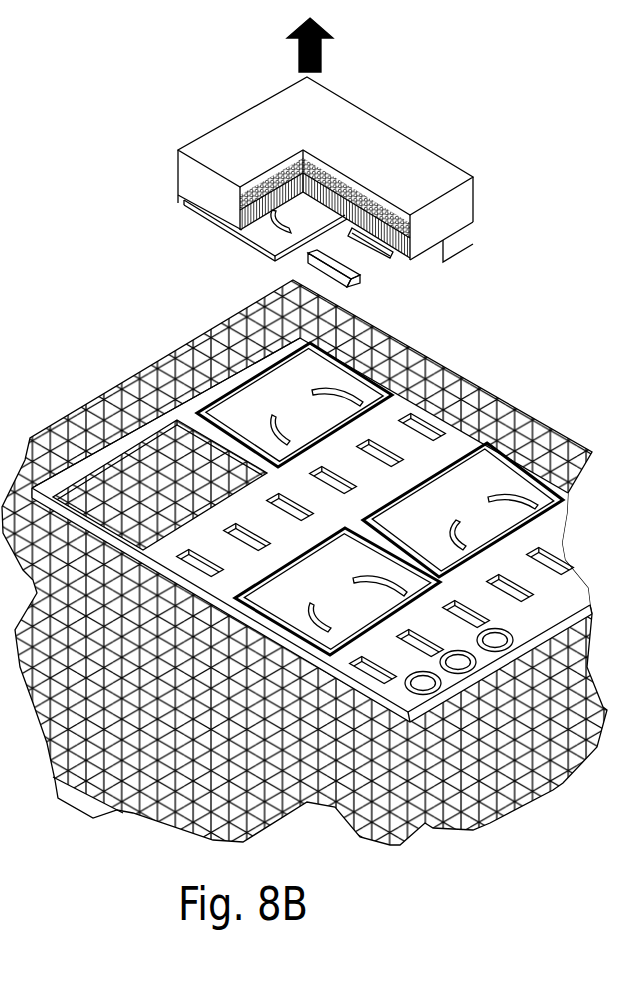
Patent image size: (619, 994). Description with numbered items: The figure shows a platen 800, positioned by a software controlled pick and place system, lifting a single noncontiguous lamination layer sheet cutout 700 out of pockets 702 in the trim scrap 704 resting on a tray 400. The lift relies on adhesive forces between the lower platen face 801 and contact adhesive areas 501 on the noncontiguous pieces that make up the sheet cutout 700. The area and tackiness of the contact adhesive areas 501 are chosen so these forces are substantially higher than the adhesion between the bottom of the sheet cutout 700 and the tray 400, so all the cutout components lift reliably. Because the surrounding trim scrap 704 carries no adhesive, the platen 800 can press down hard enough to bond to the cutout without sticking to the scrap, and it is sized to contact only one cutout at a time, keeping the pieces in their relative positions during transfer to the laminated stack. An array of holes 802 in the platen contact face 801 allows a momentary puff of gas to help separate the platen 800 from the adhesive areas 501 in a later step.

The tray 400 is at (485, 388).
The contact adhesive areas 501 is at (312, 255).
The single noncontiguous lamination layer sheet cutout 700 is at (402, 355).
The pockets 702 is at (230, 395).
The trim scrap 704 is at (182, 407).
The platen 800 is at (275, 115).
The lower platen face 801 is at (448, 258).
The array of holes 802 is at (350, 242).